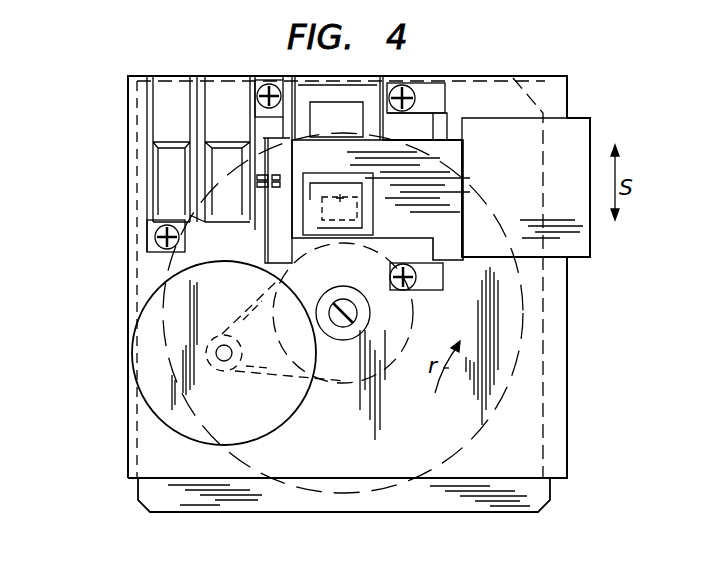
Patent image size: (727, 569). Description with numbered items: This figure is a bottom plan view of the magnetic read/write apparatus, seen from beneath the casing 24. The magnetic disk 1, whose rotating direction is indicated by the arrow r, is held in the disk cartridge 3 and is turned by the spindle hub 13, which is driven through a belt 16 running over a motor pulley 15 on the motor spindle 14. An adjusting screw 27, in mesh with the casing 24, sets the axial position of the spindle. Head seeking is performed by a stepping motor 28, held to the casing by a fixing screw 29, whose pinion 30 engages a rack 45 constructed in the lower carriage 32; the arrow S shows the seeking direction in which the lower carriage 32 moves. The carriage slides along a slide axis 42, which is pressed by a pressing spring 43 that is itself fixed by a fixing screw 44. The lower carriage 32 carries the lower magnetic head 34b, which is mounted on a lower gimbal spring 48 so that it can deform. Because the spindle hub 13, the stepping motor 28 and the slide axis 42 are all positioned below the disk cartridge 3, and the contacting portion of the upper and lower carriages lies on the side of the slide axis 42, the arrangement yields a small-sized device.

The magnetic disk 1 is at (452, 446).
The disk cartridge 3 is at (531, 501).
The spindle hub 13 is at (167, 325).
The motor spindle 14 is at (222, 362).
The motor pulley 15 is at (256, 376).
The belt 16 is at (243, 310).
The casing 24 is at (135, 451).
The adjusting screw 27 is at (357, 312).
The stepping motor 28 is at (167, 88).
The fixing screw 29 is at (272, 82).
The pinion 30 is at (258, 226).
The lower carriage 32 is at (535, 138).
The lower magnetic head 34b is at (352, 177).
The slide axis 42 is at (445, 140).
The pressing spring 43 is at (432, 97).
The fixing screw 44 is at (402, 88).
The rack 45 is at (265, 152).
The lower gimbal spring 48 is at (372, 198).